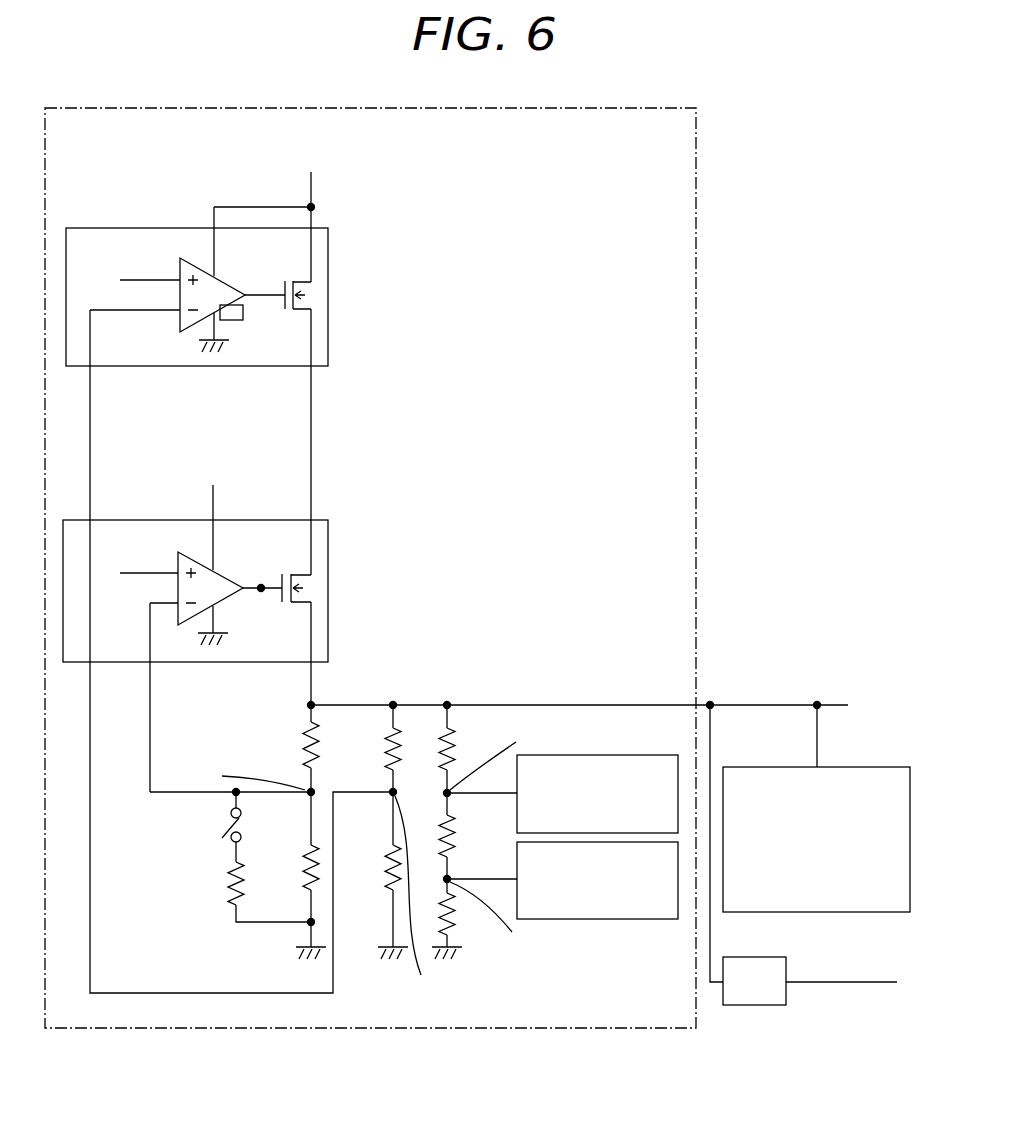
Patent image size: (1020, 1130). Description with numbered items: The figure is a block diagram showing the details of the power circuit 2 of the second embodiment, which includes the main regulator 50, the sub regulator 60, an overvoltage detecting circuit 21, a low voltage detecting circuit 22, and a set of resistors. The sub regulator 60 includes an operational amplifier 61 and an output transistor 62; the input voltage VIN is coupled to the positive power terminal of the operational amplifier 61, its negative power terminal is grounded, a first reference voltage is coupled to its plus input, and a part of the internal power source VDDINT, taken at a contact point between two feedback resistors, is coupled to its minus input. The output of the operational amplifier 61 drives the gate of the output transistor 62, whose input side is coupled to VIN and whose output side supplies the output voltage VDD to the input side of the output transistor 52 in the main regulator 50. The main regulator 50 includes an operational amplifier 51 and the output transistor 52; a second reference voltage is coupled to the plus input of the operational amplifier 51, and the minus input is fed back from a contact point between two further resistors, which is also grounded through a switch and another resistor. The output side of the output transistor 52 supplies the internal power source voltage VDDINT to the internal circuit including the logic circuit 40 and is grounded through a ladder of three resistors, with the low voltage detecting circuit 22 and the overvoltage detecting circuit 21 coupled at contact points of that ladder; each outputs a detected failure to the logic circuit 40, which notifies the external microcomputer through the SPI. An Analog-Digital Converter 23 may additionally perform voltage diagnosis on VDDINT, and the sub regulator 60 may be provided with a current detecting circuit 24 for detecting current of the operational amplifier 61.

The power circuit 2 is at (486, 146).
The sub regulator 60 is at (330, 250).
The operational amplifier 61 is at (197, 264).
The output transistor 62 is at (298, 313).
The current detecting circuit 24 is at (238, 322).
The main regulator 50 is at (330, 545).
The operational amplifier 51 is at (193, 558).
The output transistor 52 is at (296, 607).
The low voltage detecting circuit 22 is at (641, 755).
The overvoltage detecting circuit 21 is at (640, 920).
The logic circuit 40 is at (867, 766).
The Analog-Digital Converter (ADC) 23 is at (760, 1006).